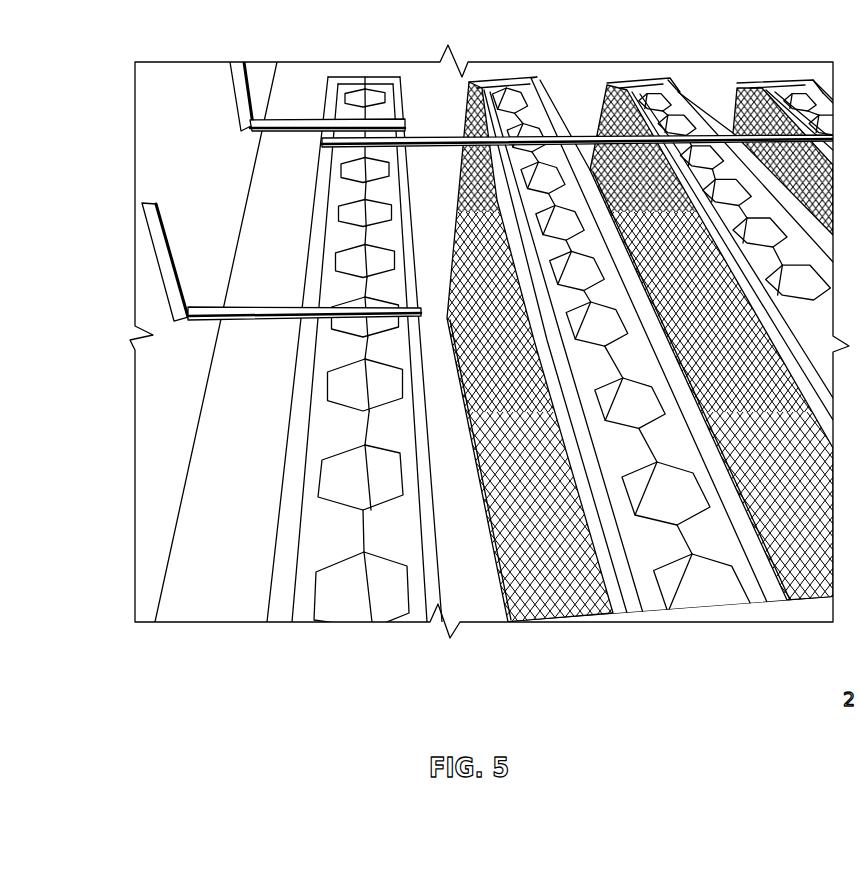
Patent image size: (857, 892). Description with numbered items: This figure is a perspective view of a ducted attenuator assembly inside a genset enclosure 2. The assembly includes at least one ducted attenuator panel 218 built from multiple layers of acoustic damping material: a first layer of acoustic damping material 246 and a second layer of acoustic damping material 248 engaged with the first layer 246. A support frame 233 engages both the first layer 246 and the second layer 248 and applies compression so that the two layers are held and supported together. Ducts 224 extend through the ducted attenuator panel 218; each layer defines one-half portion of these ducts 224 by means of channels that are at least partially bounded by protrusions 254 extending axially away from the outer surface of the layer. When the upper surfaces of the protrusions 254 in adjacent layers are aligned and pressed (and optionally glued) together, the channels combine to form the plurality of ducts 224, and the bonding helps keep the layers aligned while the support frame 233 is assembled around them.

The ducted attenuator panel 218 is at (331, 435).
The ducts 224 is at (313, 488).
The support frame 233 is at (449, 595).
The first layer of acoustic damping material 246 is at (418, 612).
The second layer of acoustic damping material 248 is at (305, 598).
The protrusions 254 is at (383, 537).
The hatched channel 2 is at (603, 347).